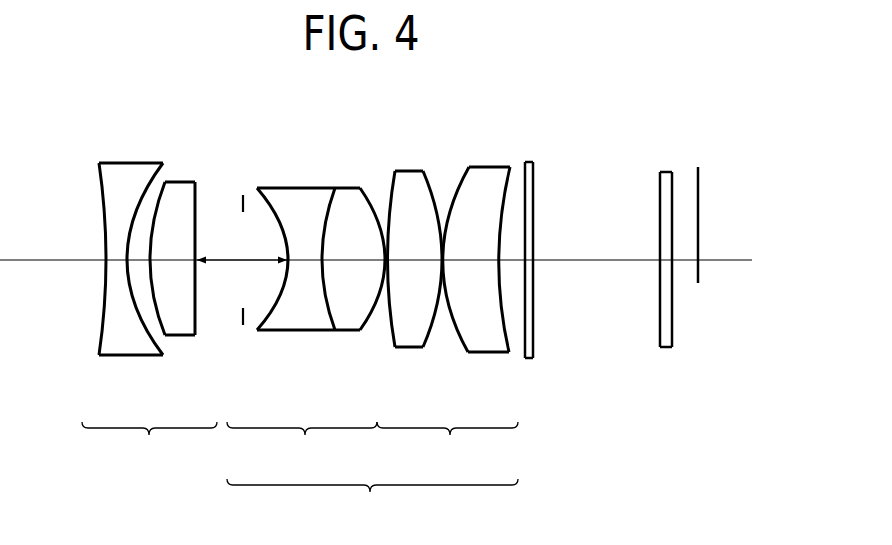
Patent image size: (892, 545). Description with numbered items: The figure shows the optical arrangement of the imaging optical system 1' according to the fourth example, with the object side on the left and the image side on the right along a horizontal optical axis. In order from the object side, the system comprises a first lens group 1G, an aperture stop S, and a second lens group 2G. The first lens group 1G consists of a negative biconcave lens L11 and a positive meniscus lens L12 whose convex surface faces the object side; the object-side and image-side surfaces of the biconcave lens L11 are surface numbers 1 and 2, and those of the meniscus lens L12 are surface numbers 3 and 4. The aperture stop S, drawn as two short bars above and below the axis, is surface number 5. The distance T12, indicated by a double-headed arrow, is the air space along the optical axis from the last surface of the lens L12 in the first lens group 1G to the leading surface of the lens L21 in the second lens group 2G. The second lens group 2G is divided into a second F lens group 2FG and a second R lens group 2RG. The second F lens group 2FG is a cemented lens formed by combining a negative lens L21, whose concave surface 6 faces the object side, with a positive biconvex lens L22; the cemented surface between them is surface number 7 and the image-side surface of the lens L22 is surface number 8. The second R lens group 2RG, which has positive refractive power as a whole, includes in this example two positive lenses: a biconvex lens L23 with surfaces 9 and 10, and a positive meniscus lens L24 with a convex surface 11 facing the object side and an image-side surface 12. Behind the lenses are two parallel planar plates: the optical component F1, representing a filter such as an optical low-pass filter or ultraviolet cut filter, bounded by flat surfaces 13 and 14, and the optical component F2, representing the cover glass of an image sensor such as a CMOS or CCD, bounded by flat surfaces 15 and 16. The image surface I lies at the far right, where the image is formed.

The imaging optical system 1' is at (711, 52).
The surface number 1 is at (92, 290).
The surface number 2 is at (143, 297).
The surface number 3 is at (158, 318).
The surface number 4 is at (195, 303).
The surface number 5 is at (238, 316).
The surface number 6 is at (259, 312).
The surface number 7 is at (328, 281).
The surface number 8 is at (369, 319).
The surface number 9 is at (391, 337).
The surface number 10 is at (436, 328).
The surface number 11 is at (462, 345).
The surface number 12 is at (506, 334).
The surface number 13 is at (520, 354).
The surface number 14 is at (534, 323).
The surface number 15 is at (660, 345).
The surface number 16 is at (673, 336).
The negative biconcave lens L11 is at (121, 269).
The positive meniscus lens L12 is at (169, 269).
The negative lens L21 is at (282, 277).
The positive lens L22 is at (360, 277).
The biconvex lens L23 is at (415, 269).
The positive meniscus lens L24 is at (480, 269).
The aperture stop S is at (222, 282).
The distance (air space) T12 is at (242, 250).
The optical component (filter) F1 is at (555, 264).
The optical component (cover glass) F2 is at (665, 267).
The image surface I is at (698, 167).
The first lens group 1G is at (149, 444).
The second lens group 2G is at (372, 499).
The second-front lens group (second F lens group) 2FG is at (302, 444).
The second-rear lens group (second R lens group) 2RG is at (447, 444).